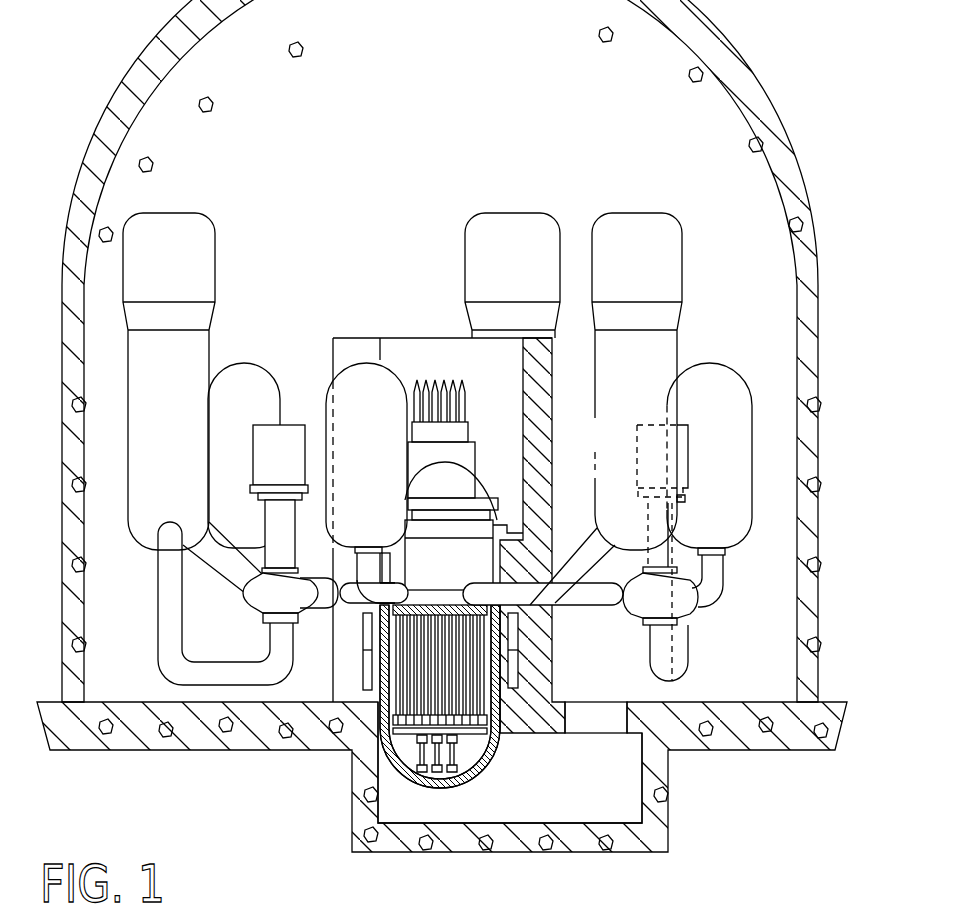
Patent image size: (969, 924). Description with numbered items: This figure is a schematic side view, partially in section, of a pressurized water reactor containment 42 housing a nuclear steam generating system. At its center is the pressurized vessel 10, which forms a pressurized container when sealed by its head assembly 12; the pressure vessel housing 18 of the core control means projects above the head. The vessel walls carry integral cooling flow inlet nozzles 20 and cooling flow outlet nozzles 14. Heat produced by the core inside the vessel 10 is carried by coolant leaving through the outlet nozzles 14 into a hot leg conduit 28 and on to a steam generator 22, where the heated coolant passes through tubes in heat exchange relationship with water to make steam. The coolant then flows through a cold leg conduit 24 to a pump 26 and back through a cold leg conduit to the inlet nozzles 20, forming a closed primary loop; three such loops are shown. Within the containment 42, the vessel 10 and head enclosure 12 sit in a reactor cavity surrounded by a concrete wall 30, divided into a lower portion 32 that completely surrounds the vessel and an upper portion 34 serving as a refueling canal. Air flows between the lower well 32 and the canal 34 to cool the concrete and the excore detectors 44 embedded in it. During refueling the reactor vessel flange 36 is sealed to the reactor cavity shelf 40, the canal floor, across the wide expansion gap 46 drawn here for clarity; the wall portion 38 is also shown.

The pressurized vessel 10 is at (418, 568).
The head assembly 12 is at (480, 477).
The cooling flow outlet nozzles 14 is at (552, 607).
The pressure vessel housing 18 is at (472, 423).
The cooling flow inlet nozzles 20 is at (352, 606).
The steam generator 22 is at (185, 281).
The cold leg conduit 24 is at (160, 622).
The pump 26 is at (262, 608).
The hot leg conduit 28 is at (220, 548).
The concrete wall 30 is at (547, 735).
The lower portion of reactor cavity 32 is at (497, 813).
The upper portion of reactor cavity 34 is at (430, 353).
The reactor vessel flange 36 is at (493, 510).
The shield wall 38 is at (515, 527).
The reactor cavity shelf 40 is at (528, 532).
The containment 42 is at (803, 178).
The excore detectors 44 is at (363, 675).
The expansion gap 46 is at (497, 718).